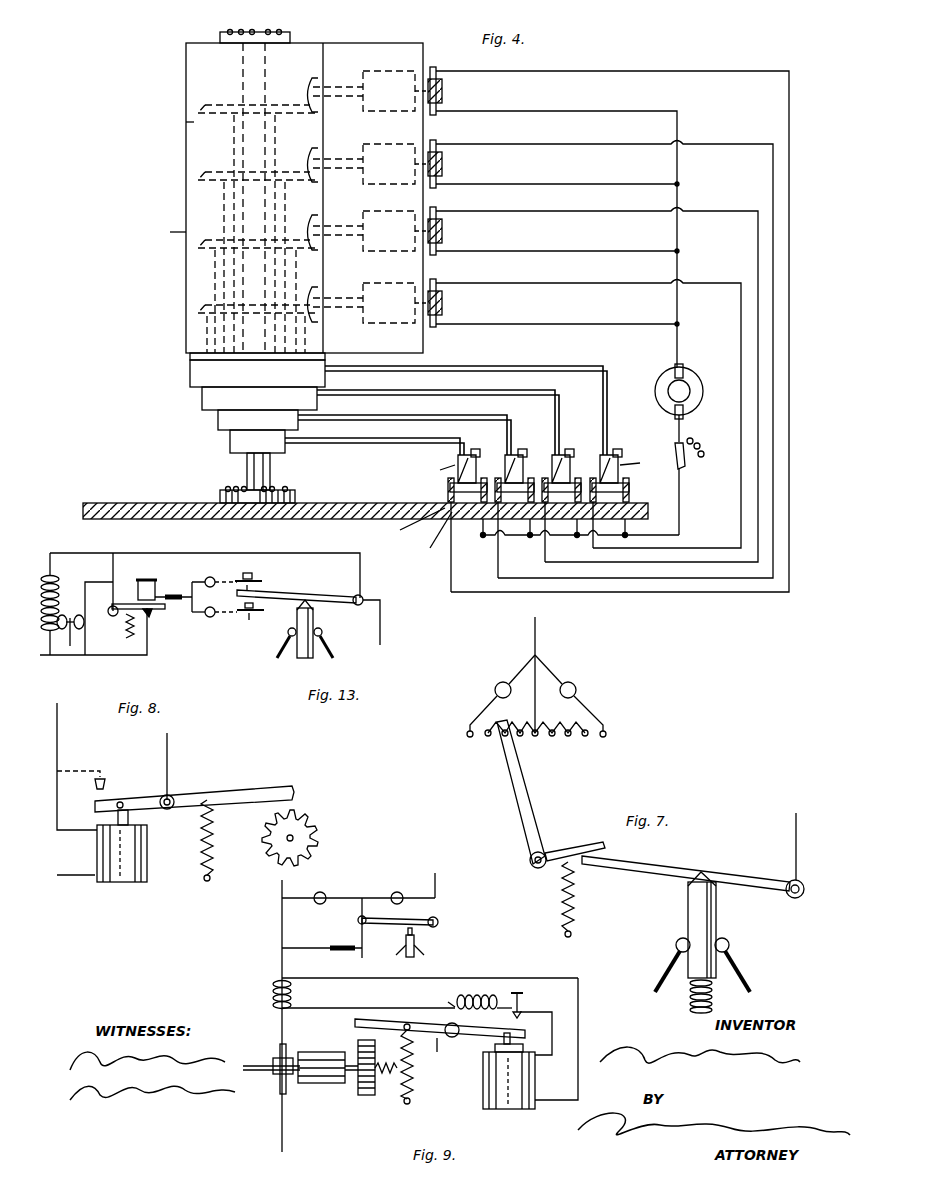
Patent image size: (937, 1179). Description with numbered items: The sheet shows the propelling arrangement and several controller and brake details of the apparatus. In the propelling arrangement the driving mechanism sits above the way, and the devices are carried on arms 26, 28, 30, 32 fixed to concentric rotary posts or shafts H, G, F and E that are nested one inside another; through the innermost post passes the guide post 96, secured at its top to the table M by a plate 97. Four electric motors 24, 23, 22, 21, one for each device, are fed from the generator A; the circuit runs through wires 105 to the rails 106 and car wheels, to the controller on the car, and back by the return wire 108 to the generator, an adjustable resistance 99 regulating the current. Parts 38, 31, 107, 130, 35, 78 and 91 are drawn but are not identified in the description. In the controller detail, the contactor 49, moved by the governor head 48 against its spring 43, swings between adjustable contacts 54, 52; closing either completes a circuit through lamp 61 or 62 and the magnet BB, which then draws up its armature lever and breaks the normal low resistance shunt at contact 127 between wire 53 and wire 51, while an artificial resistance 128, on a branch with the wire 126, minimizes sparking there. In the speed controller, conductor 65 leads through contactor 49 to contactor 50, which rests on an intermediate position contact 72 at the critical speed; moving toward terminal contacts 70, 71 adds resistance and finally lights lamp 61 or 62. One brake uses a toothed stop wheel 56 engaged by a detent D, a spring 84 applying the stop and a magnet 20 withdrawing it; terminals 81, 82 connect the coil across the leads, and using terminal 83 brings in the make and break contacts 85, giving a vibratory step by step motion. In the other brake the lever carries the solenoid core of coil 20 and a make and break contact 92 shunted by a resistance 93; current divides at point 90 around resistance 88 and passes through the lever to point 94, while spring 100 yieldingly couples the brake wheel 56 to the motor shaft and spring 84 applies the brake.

In FIG. 4, the contact brush bar 38 is at (290, 36).
In FIG. 4, the guide post 96 is at (240, 79).
In FIG. 4, the casing 31 is at (186, 122).
In FIG. 4, the electric motor 24 is at (396, 91).
In FIG. 4, the electric motor 23 is at (396, 164).
In FIG. 4, the electric motor 22 is at (396, 231).
In FIG. 4, the electric motor 21 is at (396, 303).
In FIG. 4, the wires 105 is at (790, 130).
In FIG. 4, the arm 26 is at (590, 366).
In FIG. 4, the arm 28 is at (560, 390).
In FIG. 4, the arm 30 is at (512, 418).
In FIG. 4, the arm 32 is at (460, 442).
In FIG. 4, the adjustable resistance 99 is at (703, 458).
In FIG. 4, the plate 97 is at (295, 496).
In FIG. 4, the rails 106 is at (432, 535).
In FIG. 4, the conductor 107 is at (412, 523).
In FIG. 4, the return wire 108 is at (480, 540).
In FIG. 13, the wire 126 is at (205, 566).
In FIG. 13, the artificial resistance 128 is at (65, 614).
In FIG. 13, the governor 130 is at (80, 630).
In FIG. 13, the circuit wire 51 is at (52, 657).
In FIG. 7, the circuit wire 51 is at (549, 675).
In FIG. 9, the circuit wire 51 is at (286, 1135).
In FIG. 13, the resistance 35 is at (173, 588).
In FIG. 13, the contact 127 is at (152, 616).
In FIG. 13, the signal lamp 61 is at (205, 584).
In FIG. 7, the signal lamp 61 is at (501, 682).
In FIG. 9, the signal lamp 61 is at (358, 888).
In FIG. 13, the signal lamp 62 is at (205, 622).
In FIG. 7, the signal lamp 62 is at (577, 690).
In FIG. 9, the signal lamp 62 is at (398, 892).
In FIG. 13, the contact 54 is at (254, 579).
In FIG. 9, the contact 54 is at (395, 928).
In FIG. 13, the contact 52 is at (249, 615).
In FIG. 9, the contact 52 is at (404, 948).
In FIG. 13, the motor-circuit contactor 49 is at (300, 595).
In FIG. 9, the motor-circuit contactor 49 is at (437, 927).
In FIG. 13, the movable head 48 is at (316, 622).
In FIG. 7, the movable head 48 is at (722, 938).
In FIG. 13, the circuit wire 53 is at (385, 622).
In FIG. 9, the circuit wire 53 is at (438, 875).
In FIG. 8, the terminal 82 is at (58, 742).
In FIG. 8, the terminal 83 is at (169, 755).
In FIG. 8, the make and break contacts 85 is at (106, 789).
In FIG. 8, the spring 84 is at (214, 852).
In FIG. 9, the spring 84 is at (414, 1086).
In FIG. 8, the stop wheel 56 is at (304, 838).
In FIG. 9, the stop wheel 56 is at (345, 1085).
In FIG. 8, the terminal 81 is at (88, 877).
In FIG. 8, the controlling magnet 20 is at (128, 883).
In FIG. 7, the terminal contact 70 is at (465, 745).
In FIG. 7, the terminal contact 71 is at (612, 745).
In FIG. 7, the intermediate position contact 72 is at (538, 737).
In FIG. 7, the motor-circuit contactor 50 is at (524, 812).
In FIG. 9, the motor-circuit contactor 50 is at (374, 928).
In FIG. 7, the spring 78 is at (555, 899).
In FIG. 7, the conductor 65 is at (798, 840).
In FIG. 7, the spring 43 is at (748, 888).
In FIG. 9, the point 90 is at (280, 978).
In FIG. 9, the resistance 88 is at (268, 1003).
In FIG. 9, the conductor 91 is at (545, 978).
In FIG. 9, the resistance 93 is at (397, 994).
In FIG. 9, the make and break contact 92 is at (524, 1011).
In FIG. 9, the point 94 is at (443, 996).
In FIG. 9, the spring 100 is at (387, 1075).